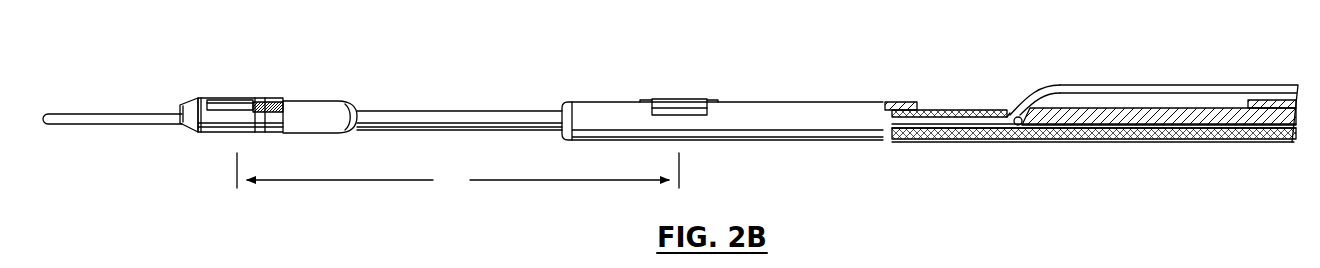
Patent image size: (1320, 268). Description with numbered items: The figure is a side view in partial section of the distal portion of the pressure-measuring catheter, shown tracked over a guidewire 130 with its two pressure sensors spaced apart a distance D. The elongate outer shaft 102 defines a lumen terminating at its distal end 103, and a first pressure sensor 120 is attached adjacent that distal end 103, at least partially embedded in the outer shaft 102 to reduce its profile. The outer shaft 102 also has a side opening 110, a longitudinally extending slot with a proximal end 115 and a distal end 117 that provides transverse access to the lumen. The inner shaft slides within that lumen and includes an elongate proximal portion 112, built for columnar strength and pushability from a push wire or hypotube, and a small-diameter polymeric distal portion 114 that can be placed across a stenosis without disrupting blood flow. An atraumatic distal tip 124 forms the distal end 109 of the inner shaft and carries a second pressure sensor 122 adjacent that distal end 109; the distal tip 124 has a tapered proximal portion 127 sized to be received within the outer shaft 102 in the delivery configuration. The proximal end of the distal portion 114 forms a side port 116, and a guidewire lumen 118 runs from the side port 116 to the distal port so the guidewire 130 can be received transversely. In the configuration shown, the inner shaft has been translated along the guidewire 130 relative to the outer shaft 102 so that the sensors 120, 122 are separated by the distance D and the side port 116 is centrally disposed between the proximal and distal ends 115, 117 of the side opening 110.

The outer shaft 102 is at (1070, 142).
The distal end of outer shaft 103 is at (562, 141).
The distal end of inner shaft 109 is at (181, 126).
The side opening 110 is at (1127, 98).
The proximal portion of inner shaft 112 is at (1162, 135).
The distal portion of inner shaft 114 is at (455, 110).
The proximal end of side opening 115 is at (1248, 100).
The side port 116 is at (1015, 103).
The distal end of side opening 117 is at (926, 103).
The guidewire lumen 118 is at (1017, 125).
The first pressure sensor 120 is at (681, 92).
The second pressure sensor 122 is at (234, 92).
The distal tip 124 is at (214, 138).
The tapered proximal portion 127 is at (357, 101).
The guidewire 130 is at (105, 117).